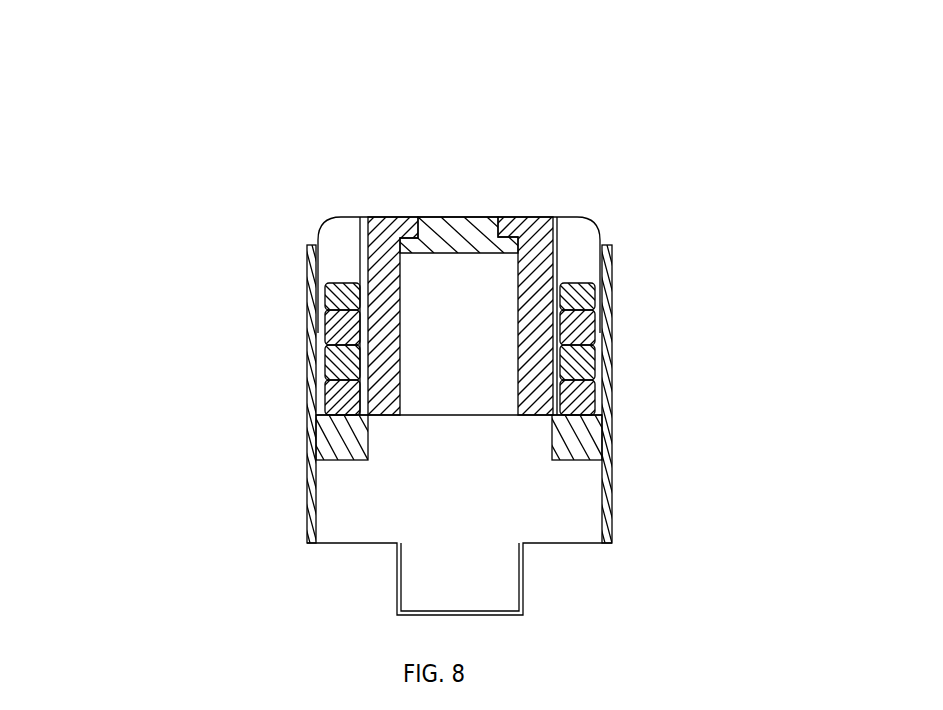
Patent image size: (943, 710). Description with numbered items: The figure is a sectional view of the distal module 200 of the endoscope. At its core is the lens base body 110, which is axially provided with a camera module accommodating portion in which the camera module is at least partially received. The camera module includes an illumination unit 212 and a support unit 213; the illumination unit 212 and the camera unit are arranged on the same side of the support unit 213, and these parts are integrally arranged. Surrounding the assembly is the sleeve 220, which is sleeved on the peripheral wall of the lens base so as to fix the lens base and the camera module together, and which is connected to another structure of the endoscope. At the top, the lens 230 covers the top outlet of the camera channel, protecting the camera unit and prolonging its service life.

The distal module 200 is at (222, 92).
The lens base body 110 is at (388, 217).
The lens 230 is at (462, 217).
The illumination unit 212 is at (587, 305).
The support unit 213 is at (587, 440).
The sleeve 220 is at (305, 422).